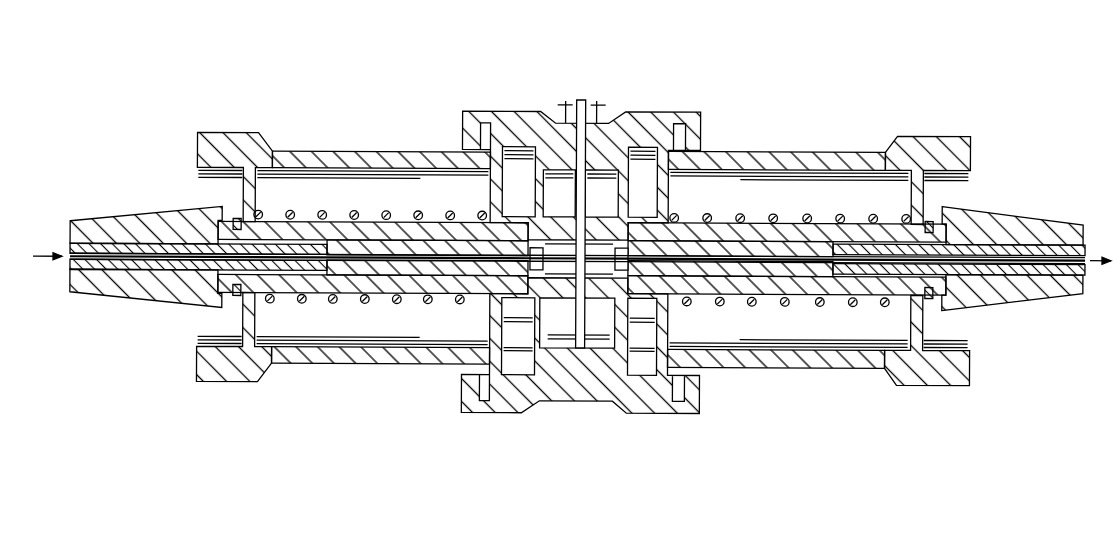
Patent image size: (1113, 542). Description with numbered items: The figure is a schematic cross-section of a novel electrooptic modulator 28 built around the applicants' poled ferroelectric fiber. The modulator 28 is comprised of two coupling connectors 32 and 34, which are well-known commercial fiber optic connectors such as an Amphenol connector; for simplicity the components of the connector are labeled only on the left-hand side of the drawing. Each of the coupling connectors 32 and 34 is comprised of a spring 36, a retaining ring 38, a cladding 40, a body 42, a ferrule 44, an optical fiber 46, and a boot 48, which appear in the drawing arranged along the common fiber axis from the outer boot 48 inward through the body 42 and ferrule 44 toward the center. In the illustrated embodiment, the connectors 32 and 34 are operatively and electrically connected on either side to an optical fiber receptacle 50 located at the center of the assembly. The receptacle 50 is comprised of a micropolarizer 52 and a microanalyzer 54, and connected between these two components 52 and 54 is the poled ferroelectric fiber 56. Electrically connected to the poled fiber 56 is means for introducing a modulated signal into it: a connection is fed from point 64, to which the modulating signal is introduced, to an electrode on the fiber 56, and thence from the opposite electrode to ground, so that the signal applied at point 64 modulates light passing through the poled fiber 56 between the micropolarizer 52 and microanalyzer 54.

The modulator 28 is at (712, 82).
The coupling connector 32 is at (327, 153).
The coupling connector 34 is at (832, 151).
The spring 36 is at (385, 212).
The retaining ring 38 is at (233, 302).
The cladding 40 is at (153, 249).
The body 42 is at (442, 292).
The ferrule 44 is at (358, 271).
The optical fiber 46 is at (473, 250).
The boot 48 is at (173, 209).
The optical fiber receptacle 50 is at (512, 111).
The micropolarizer 52 is at (532, 281).
The microanalyzer 54 is at (592, 288).
The poled ferroelectric fiber 56 is at (613, 278).
The point 64 is at (585, 101).